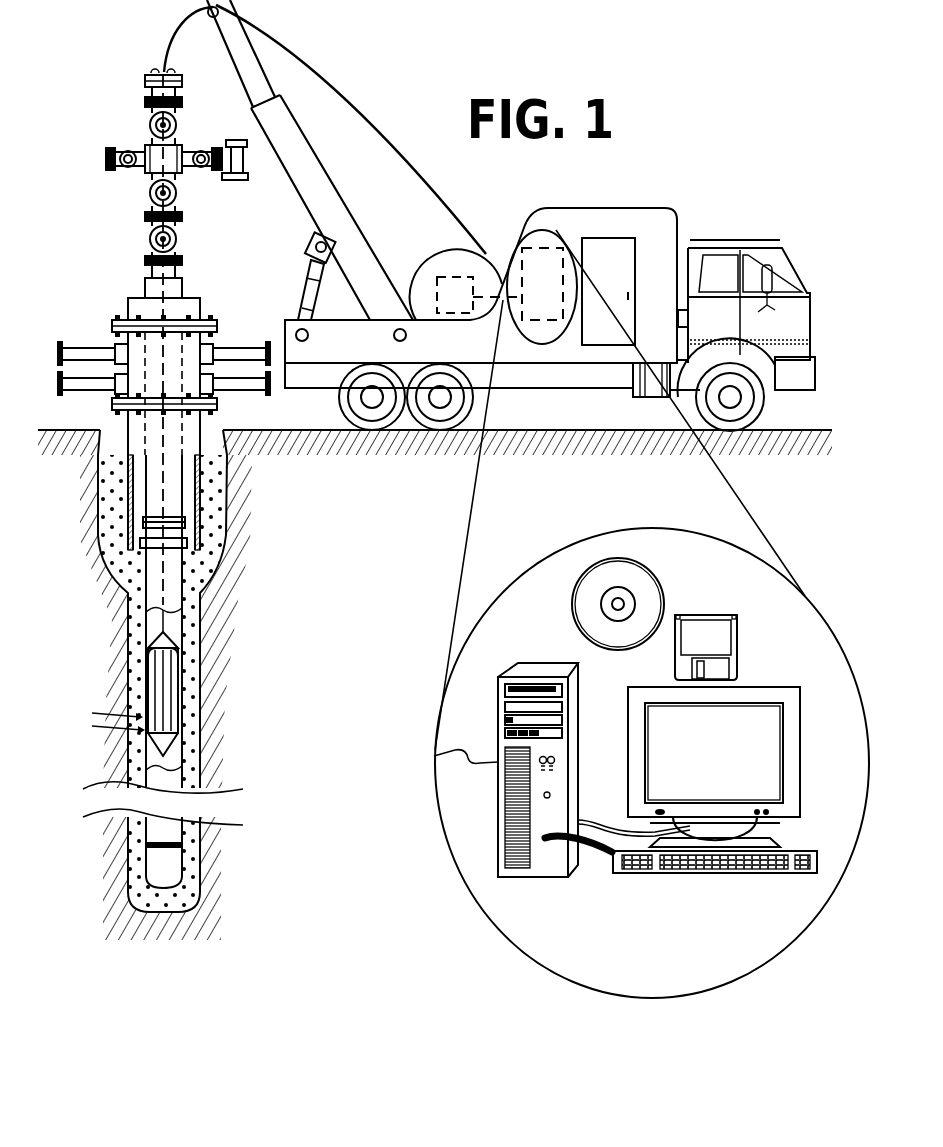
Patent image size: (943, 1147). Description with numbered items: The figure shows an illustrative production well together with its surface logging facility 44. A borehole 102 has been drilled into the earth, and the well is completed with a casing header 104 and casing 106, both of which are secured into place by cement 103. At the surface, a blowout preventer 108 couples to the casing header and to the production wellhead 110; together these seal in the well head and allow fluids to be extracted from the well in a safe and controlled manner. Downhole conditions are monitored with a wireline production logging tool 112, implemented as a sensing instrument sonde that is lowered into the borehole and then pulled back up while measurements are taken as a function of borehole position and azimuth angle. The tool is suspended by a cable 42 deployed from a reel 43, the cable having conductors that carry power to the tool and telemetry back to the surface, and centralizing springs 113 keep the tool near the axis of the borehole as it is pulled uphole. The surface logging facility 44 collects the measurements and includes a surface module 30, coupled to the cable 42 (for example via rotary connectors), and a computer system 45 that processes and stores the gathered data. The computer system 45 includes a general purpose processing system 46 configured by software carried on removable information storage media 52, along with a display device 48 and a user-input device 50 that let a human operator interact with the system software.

The surface module 30 is at (450, 277).
The cable 42 is at (316, 77).
The reel 43 is at (427, 268).
The surface logging facility 44 is at (653, 205).
The computer system 45 is at (543, 260).
The general purpose processing system 46 is at (577, 788).
The display device 48 is at (790, 820).
The user-input device 50 is at (793, 873).
The information storage media 52 is at (663, 602).
The borehole 102 is at (230, 478).
The cement 103 is at (127, 563).
The casing header 104 is at (128, 490).
The casing 106 is at (147, 628).
The blowout preventer 108 is at (127, 342).
The production wellhead 110 is at (147, 168).
The wireline production logging tool 112 is at (163, 643).
The centralizing springs 113 is at (96, 723).